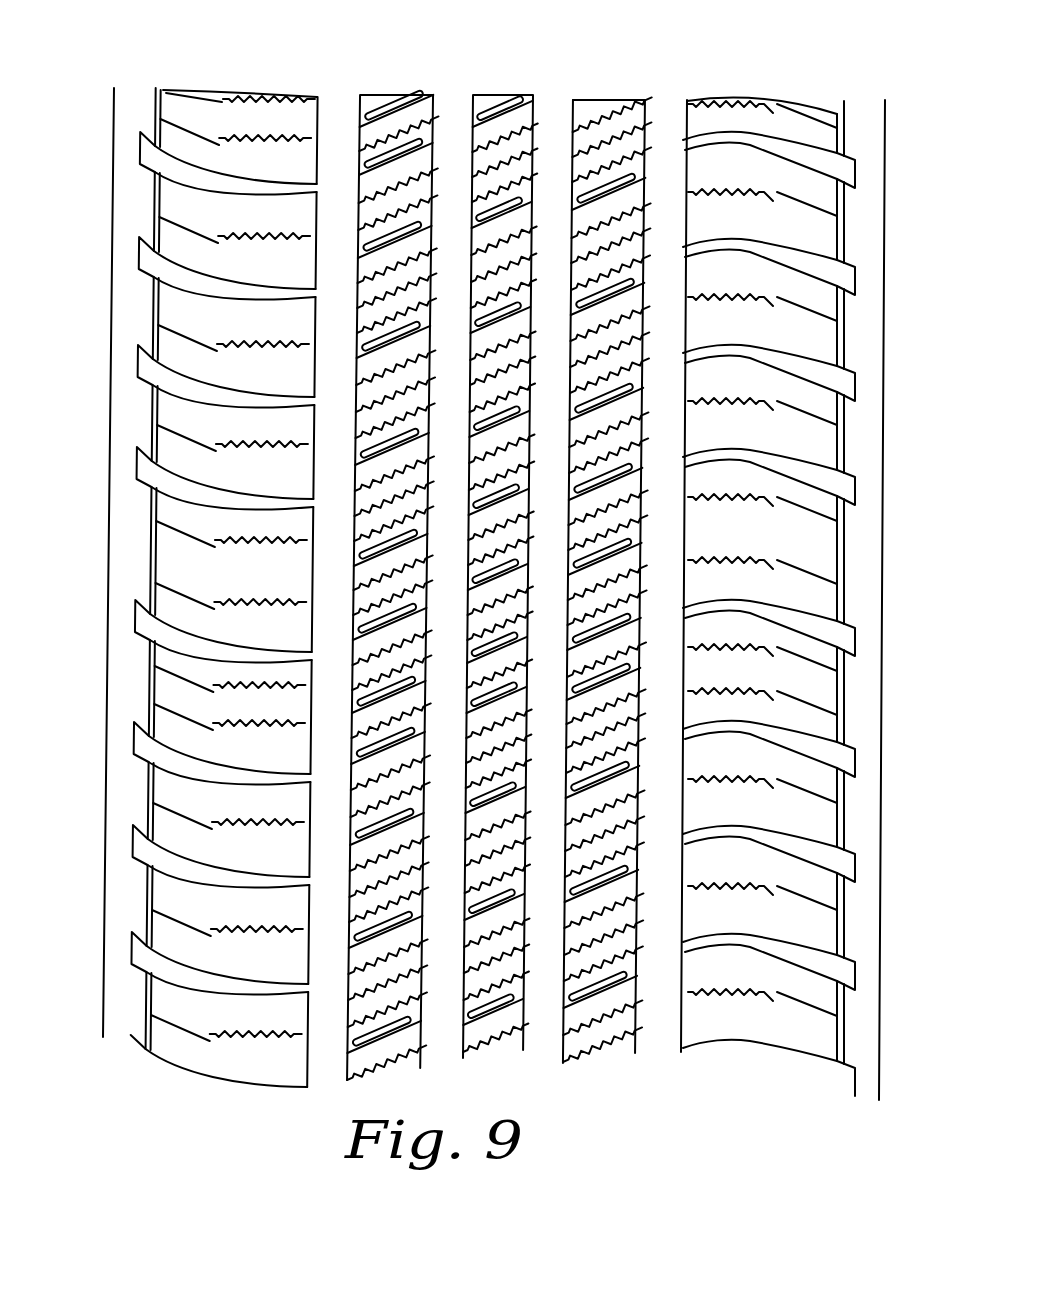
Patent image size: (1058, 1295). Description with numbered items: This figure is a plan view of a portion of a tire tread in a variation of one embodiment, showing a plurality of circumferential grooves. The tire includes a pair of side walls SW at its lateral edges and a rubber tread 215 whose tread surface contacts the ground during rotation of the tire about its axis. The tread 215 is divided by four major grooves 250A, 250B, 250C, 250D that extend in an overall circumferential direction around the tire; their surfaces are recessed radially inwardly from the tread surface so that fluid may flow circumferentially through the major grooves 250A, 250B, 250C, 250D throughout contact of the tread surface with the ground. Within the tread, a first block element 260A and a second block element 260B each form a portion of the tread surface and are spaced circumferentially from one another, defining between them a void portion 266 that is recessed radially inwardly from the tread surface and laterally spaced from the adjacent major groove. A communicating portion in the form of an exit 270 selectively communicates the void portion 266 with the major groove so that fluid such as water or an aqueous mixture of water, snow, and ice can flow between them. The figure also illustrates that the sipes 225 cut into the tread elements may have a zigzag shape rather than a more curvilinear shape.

The tread 215 is at (883, 437).
The sipes 225 is at (576, 472).
The major groove 250A is at (337, 110).
The major groove 250B is at (452, 117).
The major groove 250C is at (617, 554).
The major groove 250D is at (668, 123).
The first block element 260A is at (636, 508).
The second block element 260B is at (633, 588).
The void portion 266 is at (599, 567).
The exit 270 is at (562, 600).
The side walls SW is at (145, 720).